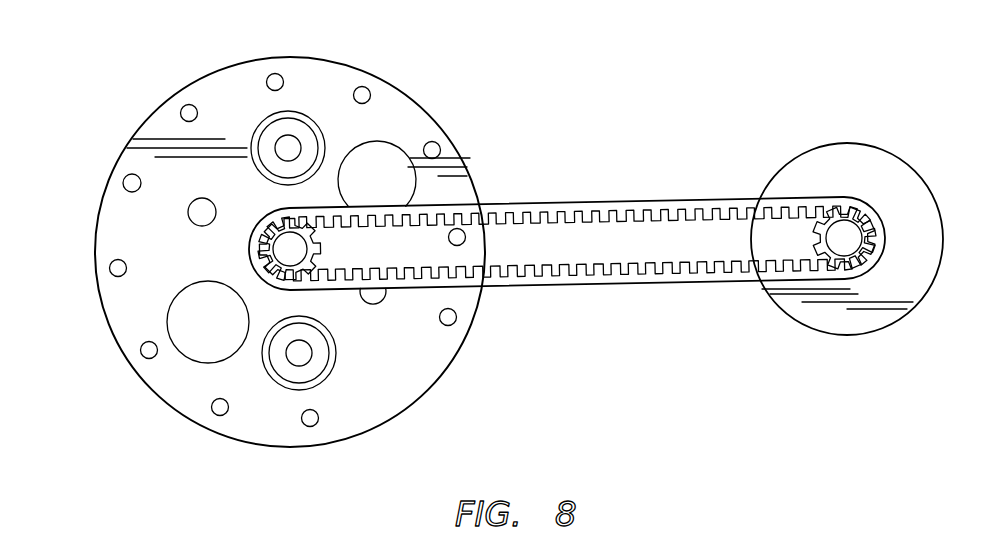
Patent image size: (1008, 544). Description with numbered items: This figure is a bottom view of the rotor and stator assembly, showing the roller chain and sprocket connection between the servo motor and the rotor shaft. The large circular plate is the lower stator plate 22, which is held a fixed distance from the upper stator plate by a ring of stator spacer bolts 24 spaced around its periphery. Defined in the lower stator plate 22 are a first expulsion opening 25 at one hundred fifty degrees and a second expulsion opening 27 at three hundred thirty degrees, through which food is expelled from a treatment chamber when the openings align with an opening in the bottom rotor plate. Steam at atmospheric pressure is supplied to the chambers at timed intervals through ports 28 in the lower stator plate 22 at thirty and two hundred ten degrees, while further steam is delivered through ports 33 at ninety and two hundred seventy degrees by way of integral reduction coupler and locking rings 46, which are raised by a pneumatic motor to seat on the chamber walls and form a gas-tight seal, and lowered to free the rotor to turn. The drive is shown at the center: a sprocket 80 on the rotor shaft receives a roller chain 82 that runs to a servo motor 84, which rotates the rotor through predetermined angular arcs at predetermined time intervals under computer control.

The lower stator plate 22 is at (330, 443).
The stator spacer bolts 24 is at (123, 178).
The first expulsion opening 25 is at (187, 357).
The second expulsion opening 27 is at (386, 146).
The ports 28 is at (192, 222).
The ports 33 is at (291, 136).
The integral reduction coupler and locking ring 46 is at (259, 116).
The sprocket 80 is at (321, 249).
The roller chain 82 is at (615, 200).
The servo motor 84 is at (837, 145).